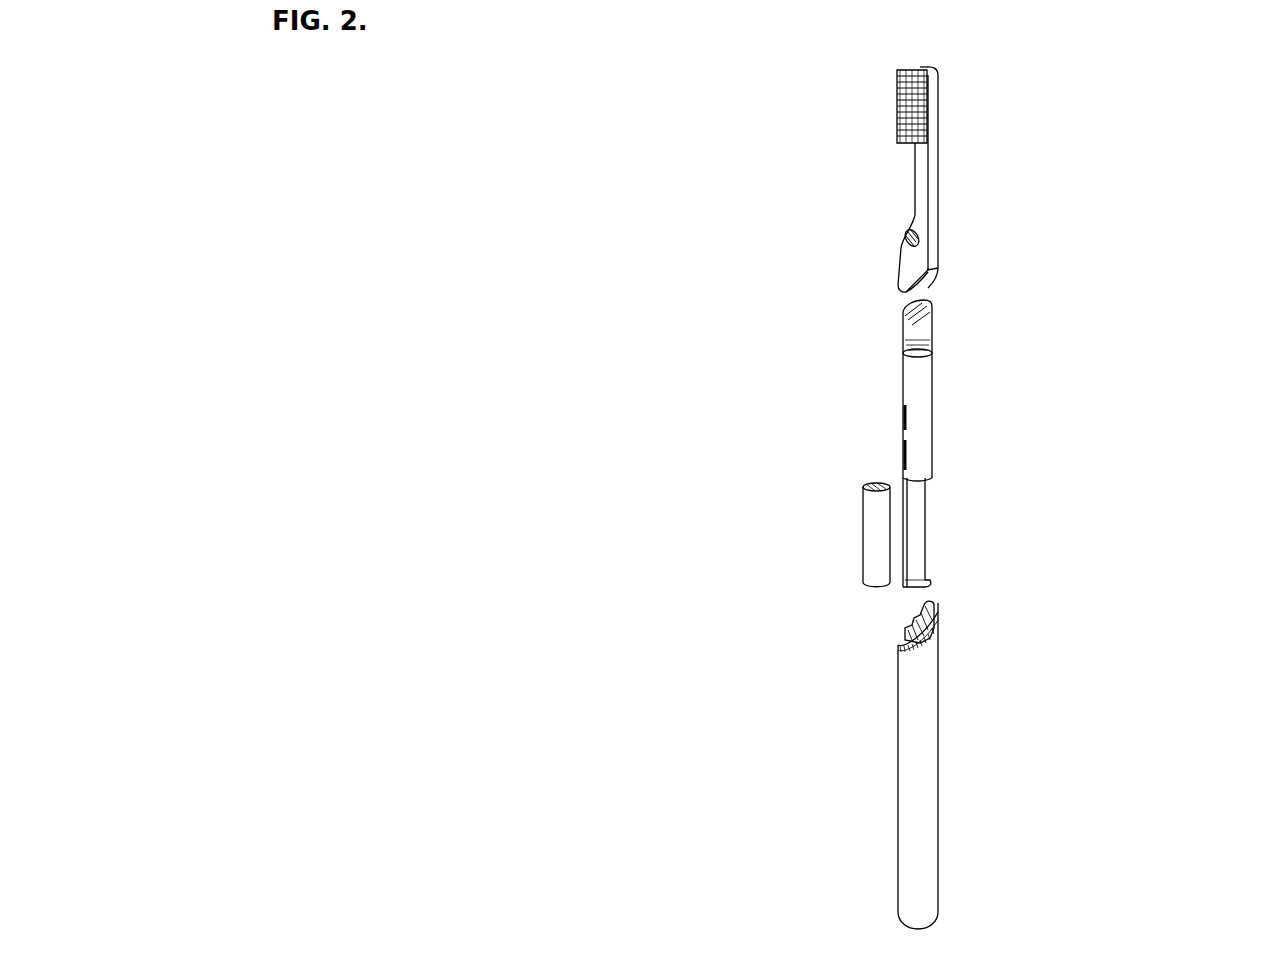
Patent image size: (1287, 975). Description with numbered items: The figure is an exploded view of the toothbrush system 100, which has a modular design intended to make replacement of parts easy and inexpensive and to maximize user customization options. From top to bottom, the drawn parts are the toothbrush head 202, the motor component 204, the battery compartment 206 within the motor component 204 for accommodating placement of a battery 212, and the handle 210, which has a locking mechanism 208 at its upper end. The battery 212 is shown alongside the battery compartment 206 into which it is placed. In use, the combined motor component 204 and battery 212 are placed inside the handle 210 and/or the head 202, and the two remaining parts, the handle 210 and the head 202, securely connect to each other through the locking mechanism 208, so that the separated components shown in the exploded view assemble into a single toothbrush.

The toothbrush system 100 is at (1238, 235).
The toothbrush head 202 is at (937, 268).
The motor component 204 is at (933, 366).
The battery compartment 206 is at (920, 512).
The locking mechanism 208 is at (940, 615).
The handle 210 is at (923, 703).
The battery 212 is at (860, 542).